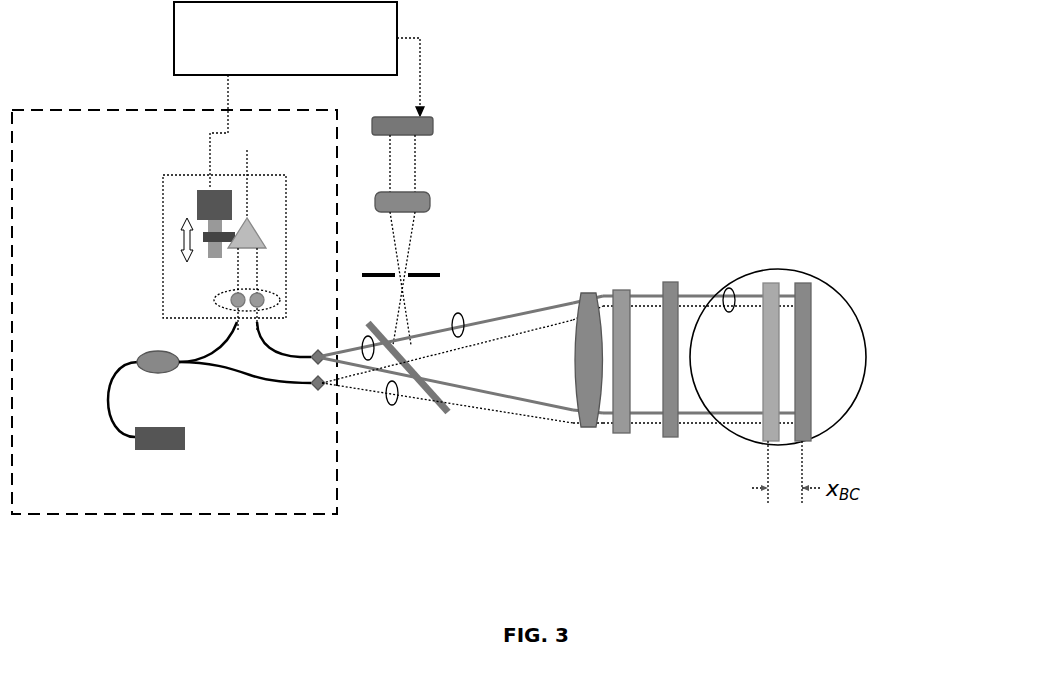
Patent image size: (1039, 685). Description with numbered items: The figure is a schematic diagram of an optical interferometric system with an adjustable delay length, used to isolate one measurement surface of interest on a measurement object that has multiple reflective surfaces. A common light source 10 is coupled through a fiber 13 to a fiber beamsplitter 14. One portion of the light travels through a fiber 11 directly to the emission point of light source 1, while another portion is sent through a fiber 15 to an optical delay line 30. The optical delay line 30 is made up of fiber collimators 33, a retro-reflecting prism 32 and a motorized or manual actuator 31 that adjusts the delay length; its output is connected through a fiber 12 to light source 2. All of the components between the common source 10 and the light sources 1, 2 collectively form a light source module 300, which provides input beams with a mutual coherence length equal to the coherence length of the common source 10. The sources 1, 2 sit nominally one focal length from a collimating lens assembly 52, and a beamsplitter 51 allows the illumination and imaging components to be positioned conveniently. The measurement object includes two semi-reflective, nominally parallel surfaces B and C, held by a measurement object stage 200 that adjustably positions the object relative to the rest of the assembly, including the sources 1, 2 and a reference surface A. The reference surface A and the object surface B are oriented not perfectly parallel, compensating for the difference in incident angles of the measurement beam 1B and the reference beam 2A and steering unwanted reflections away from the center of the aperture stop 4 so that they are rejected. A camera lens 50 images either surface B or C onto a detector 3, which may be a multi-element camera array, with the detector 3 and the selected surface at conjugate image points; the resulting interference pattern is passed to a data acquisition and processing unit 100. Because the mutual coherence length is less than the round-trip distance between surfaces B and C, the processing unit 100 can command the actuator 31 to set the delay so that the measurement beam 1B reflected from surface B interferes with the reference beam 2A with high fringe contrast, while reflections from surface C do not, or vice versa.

The data acquisition and processing unit 100 is at (299, 95).
The light source module 300 is at (248, 516).
The detector 3 is at (402, 140).
The camera lens 50 is at (430, 196).
The pinhole aperture 4 is at (376, 272).
The beamsplitter 51 is at (448, 412).
The collimating lens assembly 52 is at (632, 437).
The light source 1 is at (322, 388).
The light source 2 is at (318, 349).
The measurement beam 1B is at (392, 405).
The reference beam 2A is at (365, 340).
The common light source 10 is at (160, 450).
The fiber 11 is at (267, 384).
The fiber 12 is at (287, 355).
The fiber 13 is at (108, 386).
The fiber beamsplitter 14 is at (163, 379).
The fiber 15 is at (213, 353).
The optical delay line 30 is at (163, 247).
The actuator 31 is at (207, 184).
The retro-reflecting prism 32 is at (246, 227).
The fiber collimators 33 is at (265, 295).
The measurement object stage 200 is at (864, 380).
The reference surface A is at (680, 290).
The object surface B is at (791, 290).
The object surface C is at (766, 430).